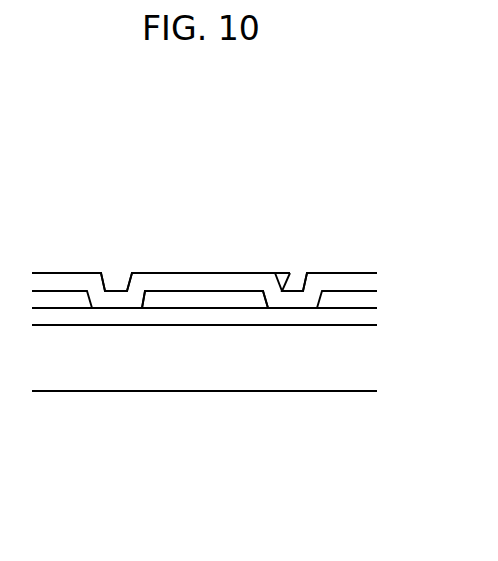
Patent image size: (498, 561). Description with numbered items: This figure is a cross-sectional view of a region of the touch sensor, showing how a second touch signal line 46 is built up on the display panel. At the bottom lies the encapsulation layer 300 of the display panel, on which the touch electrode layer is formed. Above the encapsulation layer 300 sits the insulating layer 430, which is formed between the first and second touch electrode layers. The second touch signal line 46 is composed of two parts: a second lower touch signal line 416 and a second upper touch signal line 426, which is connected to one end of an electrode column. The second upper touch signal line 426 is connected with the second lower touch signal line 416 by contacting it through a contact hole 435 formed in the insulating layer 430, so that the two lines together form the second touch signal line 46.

The second touch signal line 46 is at (375, 210).
The second lower touch signal line 416 is at (243, 316).
The second upper touch signal line 426 is at (351, 283).
The contact hole 435 is at (93, 299).
The insulating layer 430 is at (163, 303).
The encapsulation layer 300 is at (243, 375).